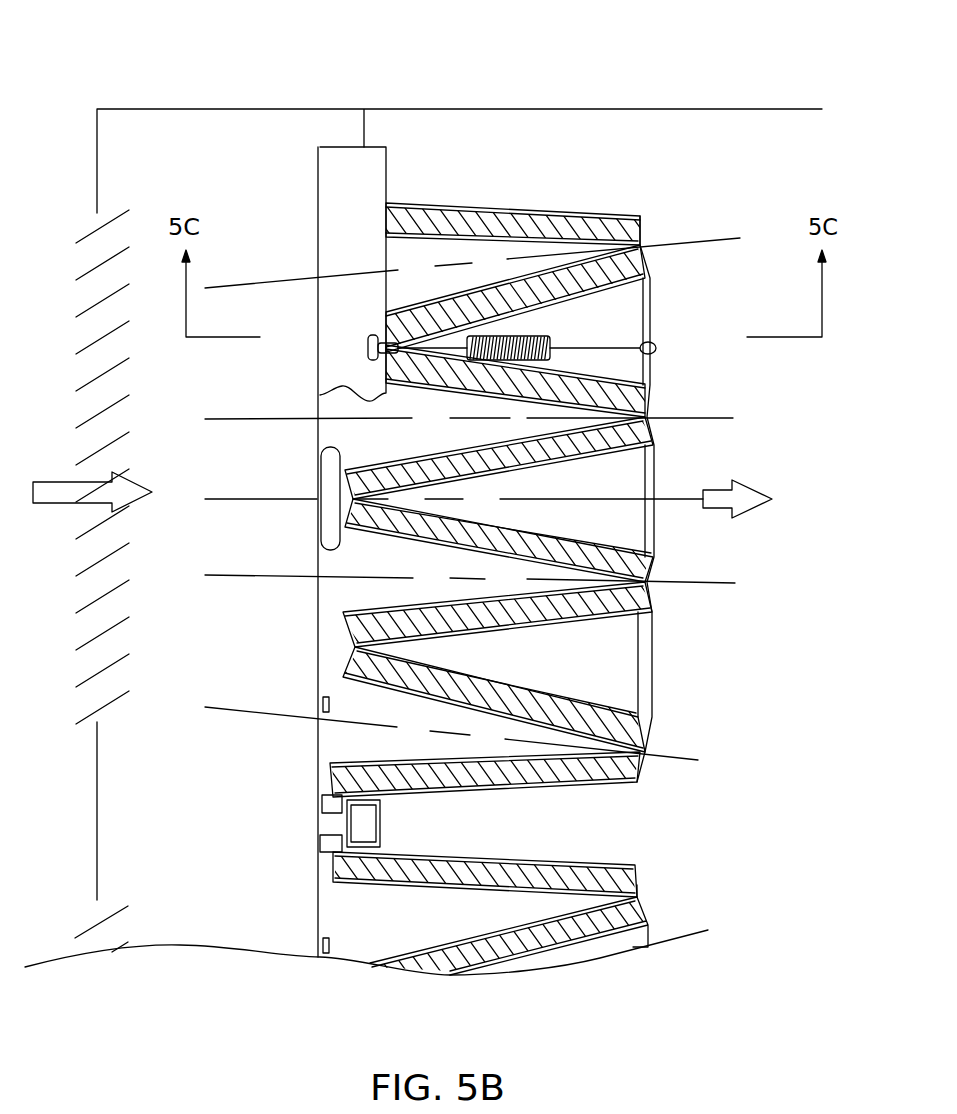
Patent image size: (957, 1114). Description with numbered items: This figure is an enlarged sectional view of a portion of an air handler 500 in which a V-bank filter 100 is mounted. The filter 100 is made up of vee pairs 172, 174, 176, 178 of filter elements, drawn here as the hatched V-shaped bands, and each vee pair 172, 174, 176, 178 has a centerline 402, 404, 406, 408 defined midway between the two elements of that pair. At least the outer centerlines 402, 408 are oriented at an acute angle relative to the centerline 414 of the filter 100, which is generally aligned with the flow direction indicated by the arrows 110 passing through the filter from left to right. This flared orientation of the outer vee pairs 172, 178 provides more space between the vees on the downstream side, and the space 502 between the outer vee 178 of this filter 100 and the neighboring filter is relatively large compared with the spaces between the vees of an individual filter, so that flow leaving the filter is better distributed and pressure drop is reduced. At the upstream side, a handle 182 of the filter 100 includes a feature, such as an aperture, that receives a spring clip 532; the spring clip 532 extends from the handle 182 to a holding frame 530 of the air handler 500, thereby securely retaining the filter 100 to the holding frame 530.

The filter 100 is at (478, 576).
The flow direction 110 is at (50, 482).
The vee pair 172 is at (545, 808).
The vee pair 174 is at (525, 625).
The vee pair 176 is at (515, 460).
The vee pair 178 is at (452, 198).
The handle 182 is at (652, 305).
The centerline 402 is at (665, 752).
The centerline 404 is at (690, 582).
The centerline 406 is at (693, 418).
The centerline 408 is at (650, 245).
The centerline of the filter 414 is at (670, 497).
The air handler 500 is at (530, 100).
The space 502 is at (690, 859).
The holding frame 530 is at (372, 162).
The spring clip 532 is at (487, 337).